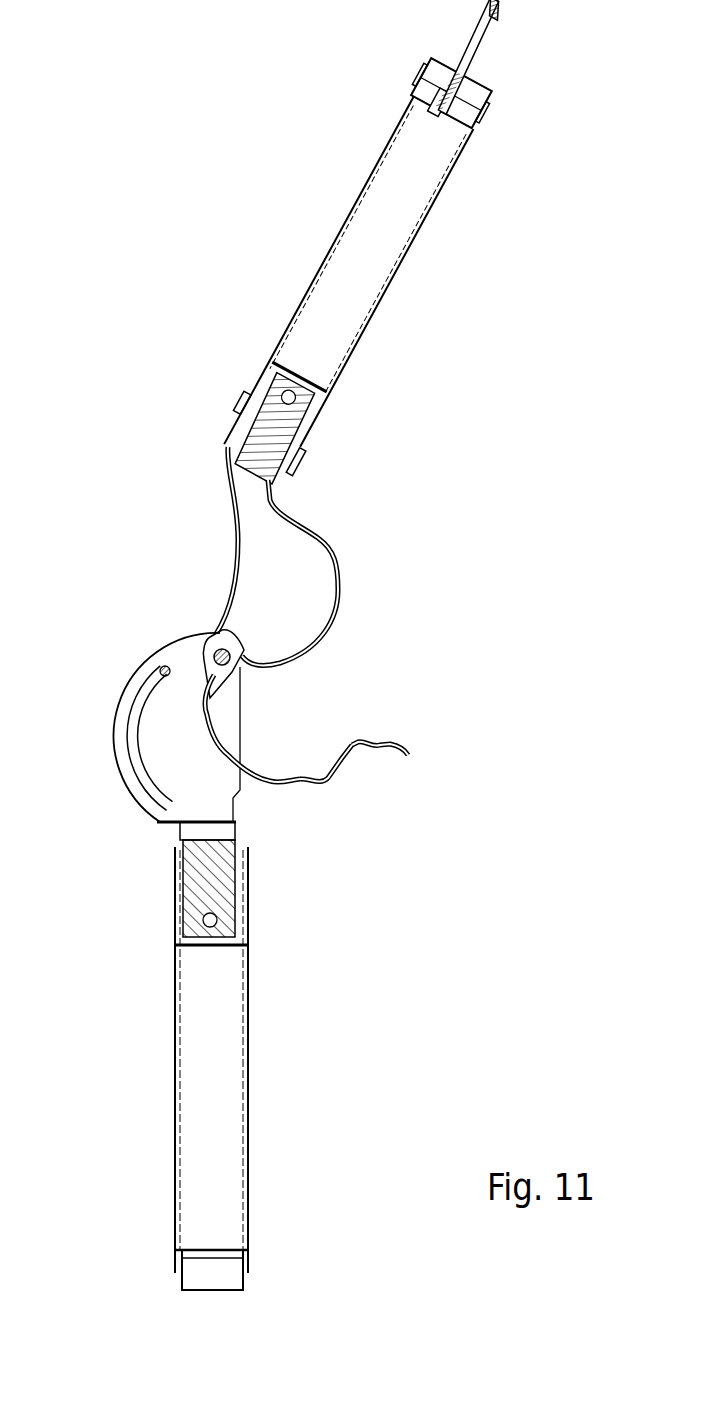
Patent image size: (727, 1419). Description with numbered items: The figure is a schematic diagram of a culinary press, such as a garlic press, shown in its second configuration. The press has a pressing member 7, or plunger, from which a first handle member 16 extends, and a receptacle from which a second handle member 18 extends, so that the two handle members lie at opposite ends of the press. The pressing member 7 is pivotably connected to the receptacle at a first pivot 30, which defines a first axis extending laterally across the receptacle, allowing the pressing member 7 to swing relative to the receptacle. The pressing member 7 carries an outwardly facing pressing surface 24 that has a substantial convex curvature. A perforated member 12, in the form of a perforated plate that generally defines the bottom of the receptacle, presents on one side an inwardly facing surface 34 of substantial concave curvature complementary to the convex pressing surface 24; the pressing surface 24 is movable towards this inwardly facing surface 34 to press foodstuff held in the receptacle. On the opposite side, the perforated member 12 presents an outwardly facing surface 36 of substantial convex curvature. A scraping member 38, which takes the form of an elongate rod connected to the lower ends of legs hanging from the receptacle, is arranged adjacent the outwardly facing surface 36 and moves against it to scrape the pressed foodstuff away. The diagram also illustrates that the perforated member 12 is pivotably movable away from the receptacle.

The first handle member 16 is at (412, 200).
The pressing member 7 is at (310, 588).
The pressing surface 24 is at (340, 594).
The first pivot 30 is at (212, 660).
The scraping member 38 is at (158, 670).
The inwardly facing surface 34 is at (267, 773).
The outwardly facing surface 36 is at (283, 790).
The perforated member 12 is at (409, 751).
The second handle member 18 is at (230, 1142).